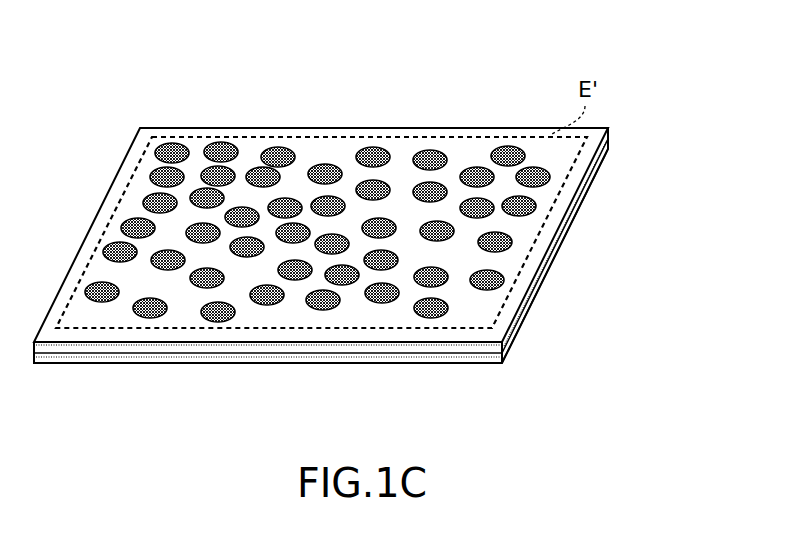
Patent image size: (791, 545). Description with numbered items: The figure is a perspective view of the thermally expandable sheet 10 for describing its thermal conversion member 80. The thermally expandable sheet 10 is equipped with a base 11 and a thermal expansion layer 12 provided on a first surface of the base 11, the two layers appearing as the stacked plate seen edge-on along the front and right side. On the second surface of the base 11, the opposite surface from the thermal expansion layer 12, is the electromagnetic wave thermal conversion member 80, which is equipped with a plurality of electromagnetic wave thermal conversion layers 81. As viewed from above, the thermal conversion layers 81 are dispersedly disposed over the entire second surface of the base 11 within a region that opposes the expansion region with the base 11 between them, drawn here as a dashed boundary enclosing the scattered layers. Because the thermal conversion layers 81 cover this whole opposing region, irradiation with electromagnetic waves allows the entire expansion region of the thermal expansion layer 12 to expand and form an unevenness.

The thermally expandable sheet 10 is at (626, 111).
The base 11 is at (395, 352).
The thermal expansion layer 12 is at (453, 360).
The thermal conversion member 80 is at (317, 173).
The thermal conversion layer 81 is at (229, 150).